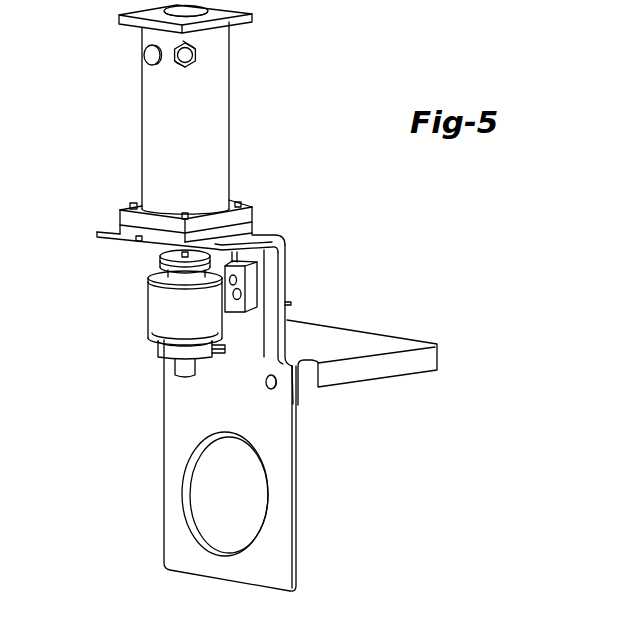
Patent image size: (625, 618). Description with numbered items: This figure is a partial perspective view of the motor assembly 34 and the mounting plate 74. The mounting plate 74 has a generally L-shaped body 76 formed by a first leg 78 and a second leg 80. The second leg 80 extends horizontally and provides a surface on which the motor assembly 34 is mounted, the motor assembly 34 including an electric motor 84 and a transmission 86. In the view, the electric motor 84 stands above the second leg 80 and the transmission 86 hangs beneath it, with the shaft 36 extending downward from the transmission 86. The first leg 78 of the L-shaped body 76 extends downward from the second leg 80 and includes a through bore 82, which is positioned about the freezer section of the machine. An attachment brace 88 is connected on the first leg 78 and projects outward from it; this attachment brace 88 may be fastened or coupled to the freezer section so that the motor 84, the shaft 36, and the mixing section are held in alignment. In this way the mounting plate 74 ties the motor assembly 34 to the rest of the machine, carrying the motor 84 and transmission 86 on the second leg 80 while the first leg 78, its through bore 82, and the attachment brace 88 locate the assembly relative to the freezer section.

The motor assembly 34 is at (252, 140).
The electric motor 84 is at (229, 64).
The L-shaped body 76 is at (257, 221).
The second leg 80 is at (96, 235).
The mounting plate 74 is at (287, 280).
The transmission 86 is at (161, 310).
The shaft 36 is at (182, 366).
The attachment brace 88 is at (416, 338).
The first leg 78 is at (296, 549).
The through bore 82 is at (268, 504).